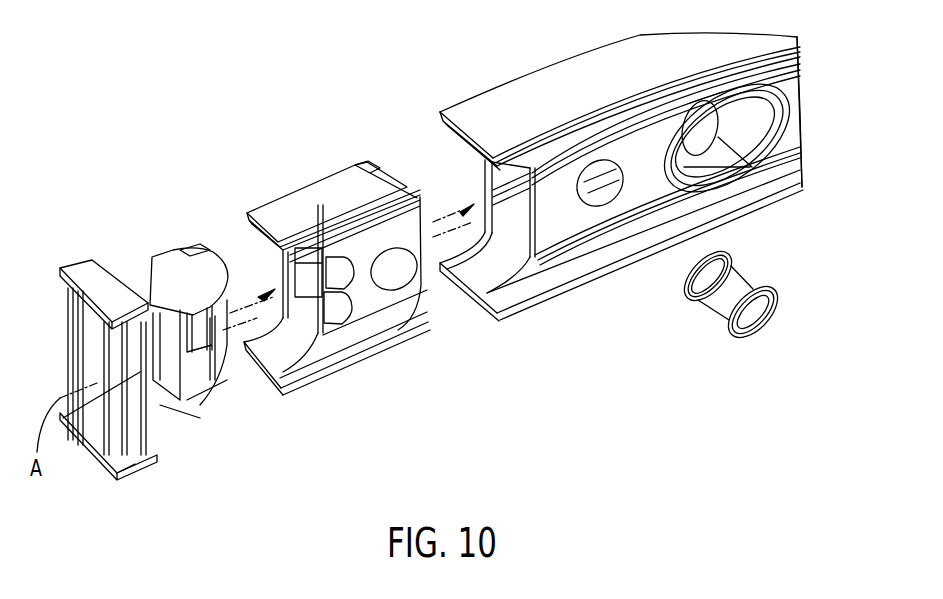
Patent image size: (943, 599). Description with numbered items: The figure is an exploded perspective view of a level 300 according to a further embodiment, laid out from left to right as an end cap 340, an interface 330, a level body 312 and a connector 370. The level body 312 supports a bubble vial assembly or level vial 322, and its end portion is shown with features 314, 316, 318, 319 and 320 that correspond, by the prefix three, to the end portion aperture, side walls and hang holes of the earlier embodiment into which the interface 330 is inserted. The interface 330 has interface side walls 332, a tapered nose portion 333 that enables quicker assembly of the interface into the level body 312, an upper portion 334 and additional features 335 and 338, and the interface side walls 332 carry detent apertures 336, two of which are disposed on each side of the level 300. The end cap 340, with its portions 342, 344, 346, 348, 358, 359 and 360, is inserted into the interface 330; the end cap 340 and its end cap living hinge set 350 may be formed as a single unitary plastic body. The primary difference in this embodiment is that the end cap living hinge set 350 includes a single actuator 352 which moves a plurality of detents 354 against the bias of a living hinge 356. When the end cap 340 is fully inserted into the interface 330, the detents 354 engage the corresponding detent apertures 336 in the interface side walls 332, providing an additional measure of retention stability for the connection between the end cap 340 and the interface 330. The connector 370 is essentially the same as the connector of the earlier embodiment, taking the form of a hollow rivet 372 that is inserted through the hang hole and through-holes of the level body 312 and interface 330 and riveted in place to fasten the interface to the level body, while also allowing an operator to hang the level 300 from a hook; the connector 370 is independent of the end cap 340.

The level 300 is at (266, 66).
The level body 312 is at (568, 72).
The end cap 314 is at (483, 104).
The bottom flange 316 is at (479, 277).
The end face 318 is at (802, 113).
The rail 319 is at (492, 161).
The aperture 320 is at (593, 197).
The level vial 322 is at (732, 107).
The interface 330 is at (398, 364).
The interface side walls 332 is at (330, 342).
The tapered nose portion 333 is at (370, 152).
The top wall 334 is at (248, 212).
The spring clip 335 is at (253, 335).
The detent apertures 336 is at (337, 310).
The tabs 338 is at (290, 280).
The end cap 340 is at (146, 341).
The cover plate 342 is at (133, 275).
The guide 344 is at (193, 250).
The arm 346 is at (197, 248).
The leg 348 is at (126, 468).
The end cap living hinge set 350 is at (232, 414).
The actuator 352 is at (190, 405).
The detents 354 is at (230, 290).
The living hinge 356 is at (170, 278).
The leg 358 is at (82, 347).
The projection 359 is at (208, 250).
The base 360 is at (110, 420).
The connector 370 is at (751, 329).
The hollow rivet 372 is at (736, 337).